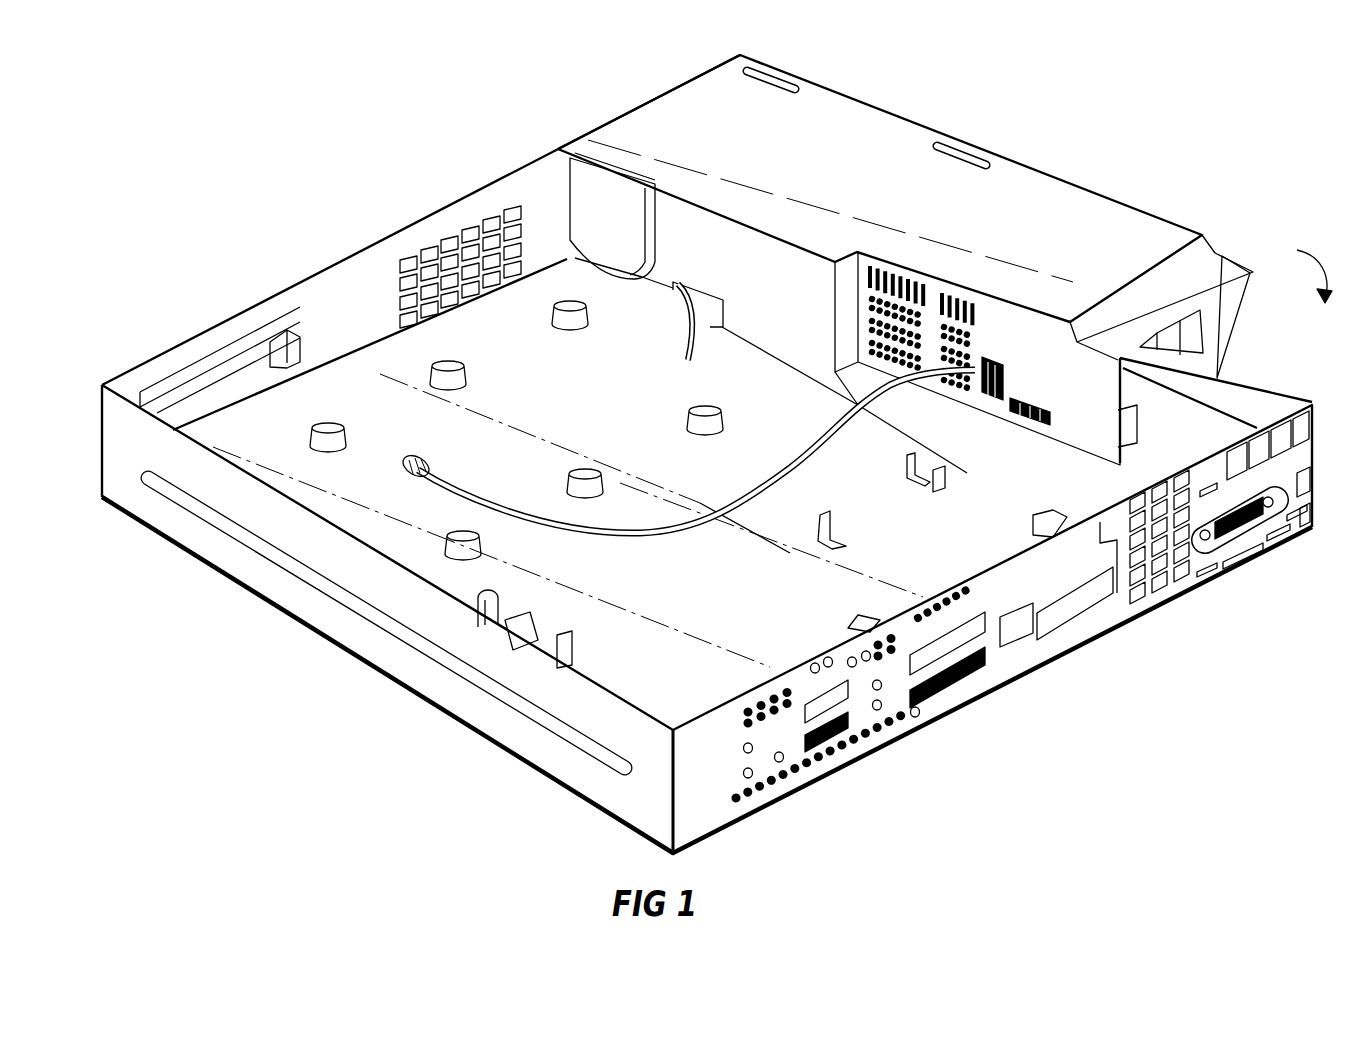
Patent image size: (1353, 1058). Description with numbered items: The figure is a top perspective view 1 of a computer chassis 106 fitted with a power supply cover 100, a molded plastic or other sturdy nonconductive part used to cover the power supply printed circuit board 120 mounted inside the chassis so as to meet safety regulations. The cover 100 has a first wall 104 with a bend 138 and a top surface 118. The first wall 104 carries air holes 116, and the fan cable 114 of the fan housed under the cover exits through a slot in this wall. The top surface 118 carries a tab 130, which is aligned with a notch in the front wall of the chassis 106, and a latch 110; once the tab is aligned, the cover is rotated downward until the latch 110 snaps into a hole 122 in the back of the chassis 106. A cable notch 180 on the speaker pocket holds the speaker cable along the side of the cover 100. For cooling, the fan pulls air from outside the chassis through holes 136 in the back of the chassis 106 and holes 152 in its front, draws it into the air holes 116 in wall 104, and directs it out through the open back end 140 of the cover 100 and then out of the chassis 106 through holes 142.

The power supply cover 100 is at (985, 140).
The first wall 104 is at (1075, 432).
The computer chassis 106 is at (992, 688).
The latch 110 is at (1195, 328).
The fan cable 114 is at (663, 533).
The air holes 116 is at (1005, 400).
The top surface 118 is at (626, 120).
The power supply printed circuit board 120 is at (884, 415).
The hole 122 is at (1213, 490).
The tab 130 is at (660, 90).
The holes 136 is at (897, 645).
The bend 138 is at (858, 258).
The back end 140 is at (1203, 385).
The holes 142 is at (1187, 593).
The holes 152 is at (448, 250).
The cable notch 180 is at (656, 187).
The cable slot 1 is at (693, 288).